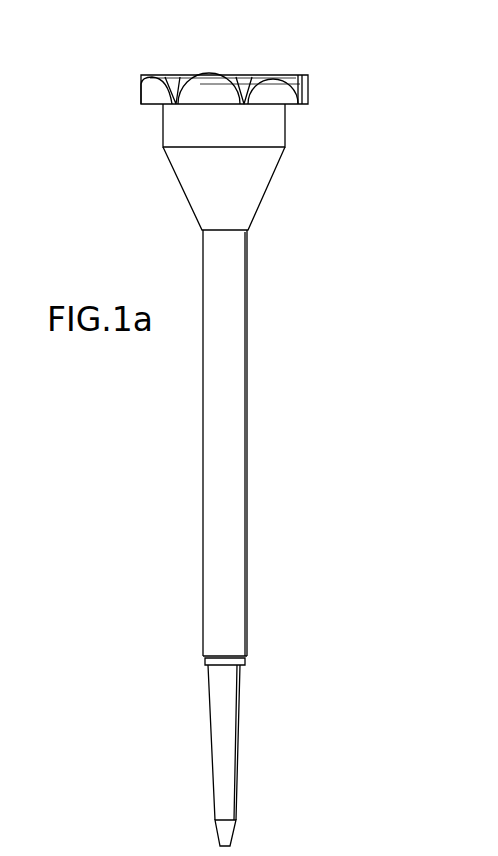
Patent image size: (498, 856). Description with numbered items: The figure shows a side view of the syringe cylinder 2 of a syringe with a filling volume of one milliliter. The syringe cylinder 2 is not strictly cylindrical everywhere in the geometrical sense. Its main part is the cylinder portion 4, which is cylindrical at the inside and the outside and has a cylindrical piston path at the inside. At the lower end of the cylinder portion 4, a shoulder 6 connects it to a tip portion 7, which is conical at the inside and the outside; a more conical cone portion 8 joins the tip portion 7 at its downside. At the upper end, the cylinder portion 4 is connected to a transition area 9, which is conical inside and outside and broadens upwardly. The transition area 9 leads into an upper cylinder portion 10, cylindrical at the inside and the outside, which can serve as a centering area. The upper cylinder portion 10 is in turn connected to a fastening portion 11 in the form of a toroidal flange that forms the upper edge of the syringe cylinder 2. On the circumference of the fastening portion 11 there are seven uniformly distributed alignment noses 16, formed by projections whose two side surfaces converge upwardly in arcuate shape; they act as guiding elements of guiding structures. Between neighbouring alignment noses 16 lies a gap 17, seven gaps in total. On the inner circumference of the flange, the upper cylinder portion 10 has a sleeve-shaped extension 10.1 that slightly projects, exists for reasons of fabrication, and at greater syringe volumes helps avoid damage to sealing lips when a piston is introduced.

The syringe cylinder 2 is at (258, 490).
The cylinder portion 4 is at (232, 372).
The shoulder 6 is at (242, 664).
The tip portion 7 is at (226, 730).
The cone portion 8 is at (228, 830).
The transition area 9 is at (232, 201).
The upper cylinder portion 10 is at (240, 143).
The sleeve-shaped extension 10.1 is at (233, 90).
The fastening portion 11 is at (313, 85).
The alignment noses 16 is at (185, 102).
The gap 17 is at (174, 86).